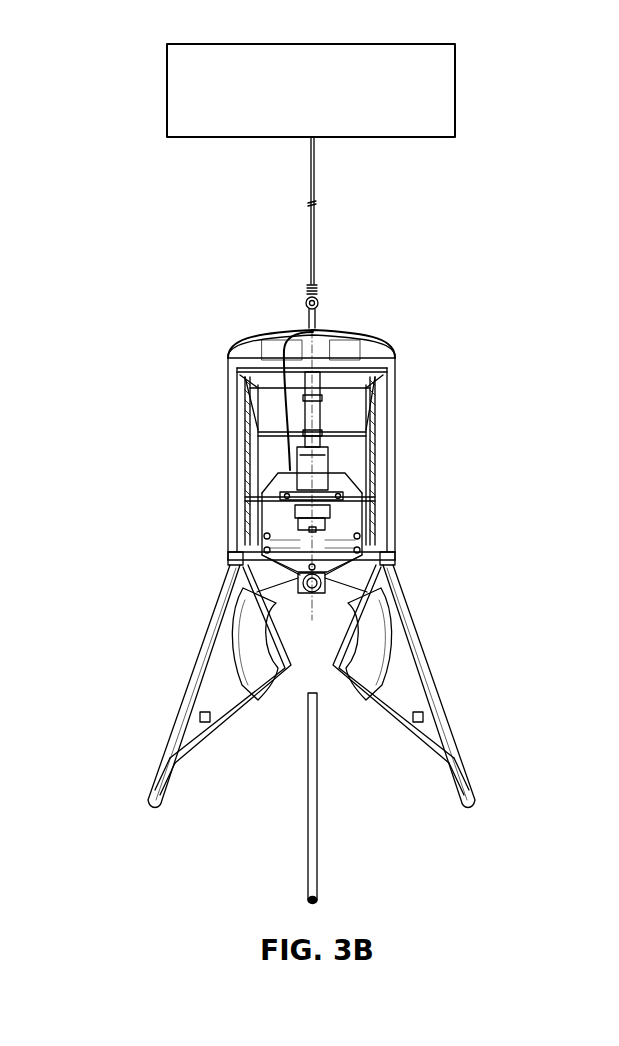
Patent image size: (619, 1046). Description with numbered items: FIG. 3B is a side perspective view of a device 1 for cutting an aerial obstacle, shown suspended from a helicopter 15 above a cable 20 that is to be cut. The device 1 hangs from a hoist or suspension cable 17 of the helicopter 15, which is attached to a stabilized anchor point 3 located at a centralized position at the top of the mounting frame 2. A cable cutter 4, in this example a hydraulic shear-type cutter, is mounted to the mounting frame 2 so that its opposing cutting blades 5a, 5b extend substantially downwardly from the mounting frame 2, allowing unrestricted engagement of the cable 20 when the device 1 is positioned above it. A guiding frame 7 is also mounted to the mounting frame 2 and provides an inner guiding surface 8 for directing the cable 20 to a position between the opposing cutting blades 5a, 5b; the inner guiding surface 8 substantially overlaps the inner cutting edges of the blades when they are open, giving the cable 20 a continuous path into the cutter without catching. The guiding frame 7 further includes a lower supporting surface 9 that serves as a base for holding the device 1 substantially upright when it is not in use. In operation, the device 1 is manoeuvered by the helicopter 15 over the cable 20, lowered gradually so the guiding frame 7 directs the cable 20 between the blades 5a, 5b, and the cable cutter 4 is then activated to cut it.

The helicopter 15 is at (455, 82).
The suspension cable 17 is at (314, 170).
The stabilized anchor point 3 is at (318, 302).
The device 1 is at (410, 402).
The mounting frame 2 is at (235, 422).
The cable cutter 4 is at (322, 523).
The cutting blade 5a is at (380, 622).
The cutting blade 5b is at (245, 640).
The guiding frame 7 is at (420, 650).
The inner guiding surface 8 is at (385, 707).
The lower supporting surface 9 is at (178, 762).
The cable 20 is at (314, 851).